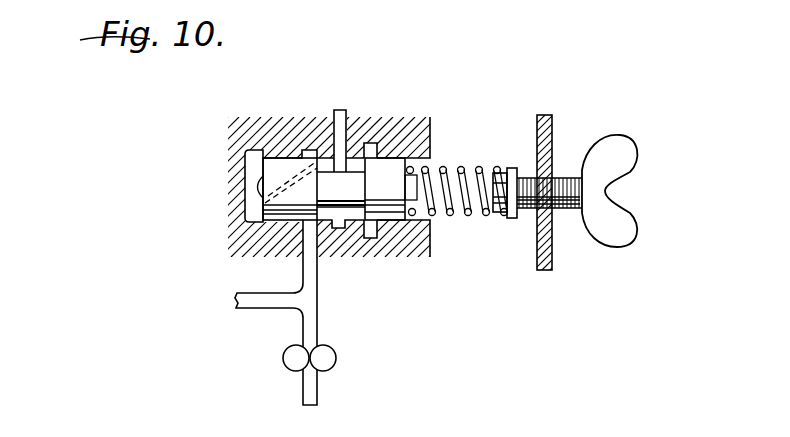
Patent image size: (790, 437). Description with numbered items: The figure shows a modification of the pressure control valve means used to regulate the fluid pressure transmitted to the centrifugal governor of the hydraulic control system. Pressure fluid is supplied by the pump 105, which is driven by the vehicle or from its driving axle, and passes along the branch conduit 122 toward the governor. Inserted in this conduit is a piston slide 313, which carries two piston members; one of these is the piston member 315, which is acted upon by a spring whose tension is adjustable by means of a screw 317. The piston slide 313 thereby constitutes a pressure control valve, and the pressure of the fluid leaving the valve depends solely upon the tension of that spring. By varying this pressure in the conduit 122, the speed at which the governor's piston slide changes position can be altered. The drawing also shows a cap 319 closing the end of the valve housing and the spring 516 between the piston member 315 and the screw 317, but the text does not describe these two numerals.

The pump 105 is at (336, 358).
The branch conduit 122 is at (376, 97).
The piston slide 313 is at (334, 177).
The piston member 315 is at (393, 197).
The screw 317 is at (567, 180).
The cap 319 is at (264, 200).
The spring 516 is at (490, 140).